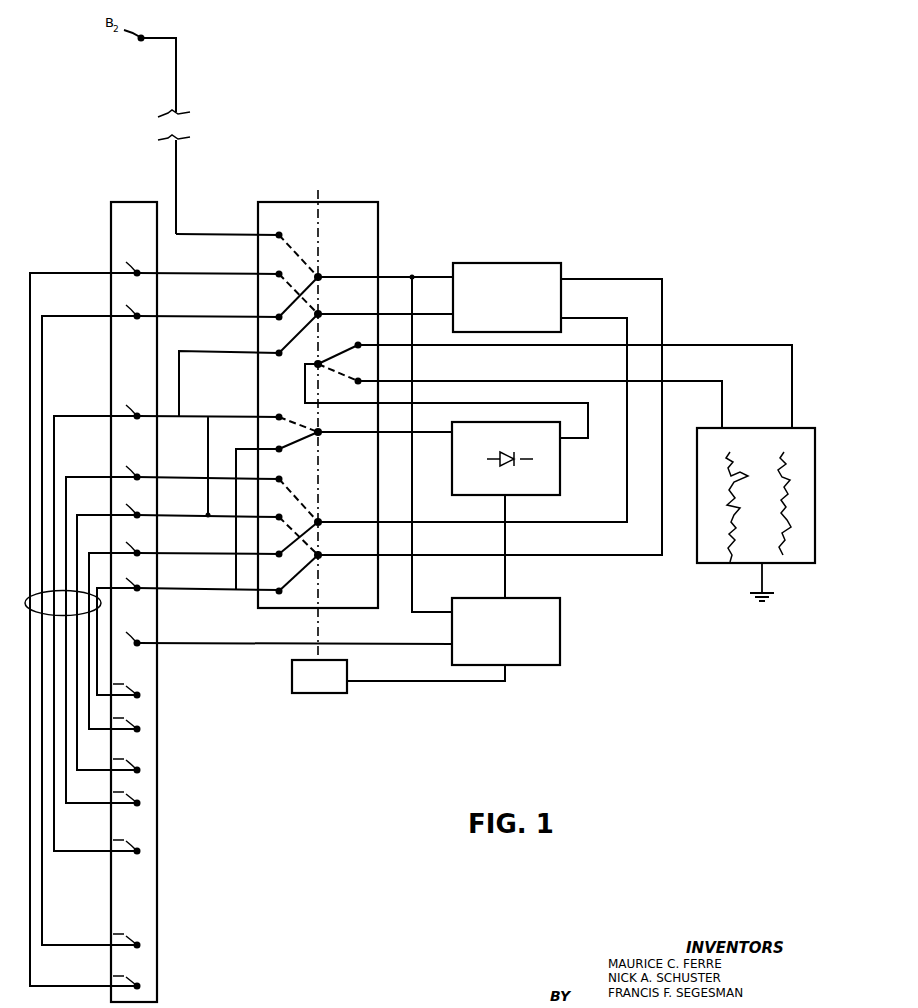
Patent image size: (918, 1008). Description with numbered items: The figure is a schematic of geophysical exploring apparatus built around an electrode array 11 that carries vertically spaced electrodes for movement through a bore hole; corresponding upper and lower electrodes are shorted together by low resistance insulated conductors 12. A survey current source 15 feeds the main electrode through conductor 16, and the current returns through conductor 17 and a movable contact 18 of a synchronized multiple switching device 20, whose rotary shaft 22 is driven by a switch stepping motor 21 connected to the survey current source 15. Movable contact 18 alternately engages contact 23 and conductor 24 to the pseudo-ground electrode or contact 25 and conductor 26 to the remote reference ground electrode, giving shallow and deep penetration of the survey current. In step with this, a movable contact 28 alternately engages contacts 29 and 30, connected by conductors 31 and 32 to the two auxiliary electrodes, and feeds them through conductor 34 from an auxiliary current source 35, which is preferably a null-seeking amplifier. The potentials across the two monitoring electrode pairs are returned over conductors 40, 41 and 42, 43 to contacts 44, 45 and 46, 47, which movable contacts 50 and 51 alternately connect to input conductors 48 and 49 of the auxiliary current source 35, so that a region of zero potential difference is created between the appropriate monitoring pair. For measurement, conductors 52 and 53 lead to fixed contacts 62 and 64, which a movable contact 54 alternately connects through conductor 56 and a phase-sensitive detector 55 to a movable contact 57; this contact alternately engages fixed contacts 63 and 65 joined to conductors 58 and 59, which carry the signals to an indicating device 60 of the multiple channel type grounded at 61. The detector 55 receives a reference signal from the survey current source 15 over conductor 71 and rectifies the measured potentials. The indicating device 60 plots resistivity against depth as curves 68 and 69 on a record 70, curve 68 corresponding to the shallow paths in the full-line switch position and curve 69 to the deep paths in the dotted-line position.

The electrode array 11 is at (157, 803).
The low resistance insulated conductors 12 is at (104, 605).
The survey current source 15 is at (560, 620).
The conductor 16 is at (212, 645).
The conductor 17 is at (413, 570).
The movable contact 18 is at (305, 292).
The synchronized multiple switching device 20 is at (350, 202).
The switch stepping motor 21 is at (312, 693).
The rotary shaft 22 is at (316, 206).
The contact 23 is at (278, 315).
The conductor 24 is at (228, 316).
The contact 25 is at (282, 234).
The conductor 26 is at (225, 233).
The movable contact 28 is at (300, 330).
The contact 29 is at (278, 352).
The contact 30 is at (278, 272).
The conductor 31 is at (228, 351).
The conductor 32 is at (222, 273).
The conductor 34 is at (405, 314).
The auxiliary current source 35 is at (487, 262).
The conductor 40 is at (225, 589).
The conductor 41 is at (210, 553).
The conductor 42 is at (198, 514).
The conductor 43 is at (200, 477).
The contact 44 is at (277, 590).
The contact 45 is at (278, 553).
The contact 46 is at (278, 516).
The contact 47 is at (282, 477).
The input conductor 48 is at (610, 555).
The input conductor 49 is at (605, 522).
The movable contact 50 is at (312, 568).
The movable contact 51 is at (306, 530).
The conductor 52 is at (236, 485).
The conductor 53 is at (236, 415).
The movable contact 54 is at (306, 437).
The phase-sensitive detector 55 is at (561, 455).
The conductor 56 is at (590, 412).
The movable contact 57 is at (340, 357).
The conductor 58 is at (712, 347).
The conductor 59 is at (722, 402).
The indicating device 60 is at (790, 563).
The ground 61 is at (752, 592).
The fixed contact 62 is at (275, 447).
The fixed contact 63 is at (366, 343).
The fixed contact 64 is at (281, 412).
The fixed contact 65 is at (356, 381).
The curve 68 is at (782, 519).
The curve 69 is at (740, 512).
The record 70 is at (705, 553).
The conductor 71 is at (504, 545).